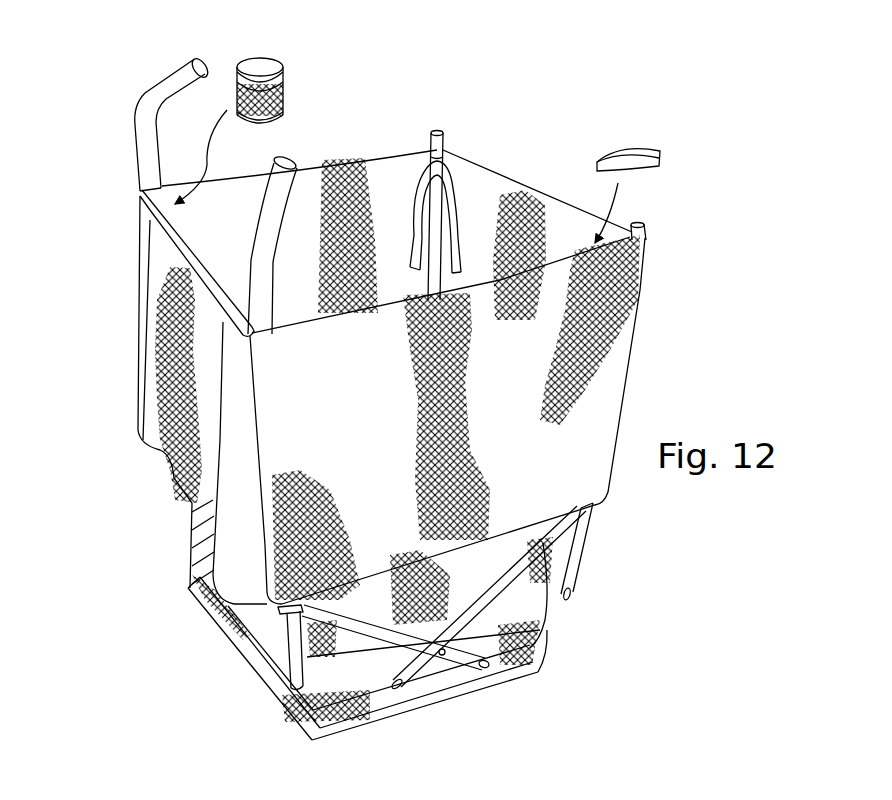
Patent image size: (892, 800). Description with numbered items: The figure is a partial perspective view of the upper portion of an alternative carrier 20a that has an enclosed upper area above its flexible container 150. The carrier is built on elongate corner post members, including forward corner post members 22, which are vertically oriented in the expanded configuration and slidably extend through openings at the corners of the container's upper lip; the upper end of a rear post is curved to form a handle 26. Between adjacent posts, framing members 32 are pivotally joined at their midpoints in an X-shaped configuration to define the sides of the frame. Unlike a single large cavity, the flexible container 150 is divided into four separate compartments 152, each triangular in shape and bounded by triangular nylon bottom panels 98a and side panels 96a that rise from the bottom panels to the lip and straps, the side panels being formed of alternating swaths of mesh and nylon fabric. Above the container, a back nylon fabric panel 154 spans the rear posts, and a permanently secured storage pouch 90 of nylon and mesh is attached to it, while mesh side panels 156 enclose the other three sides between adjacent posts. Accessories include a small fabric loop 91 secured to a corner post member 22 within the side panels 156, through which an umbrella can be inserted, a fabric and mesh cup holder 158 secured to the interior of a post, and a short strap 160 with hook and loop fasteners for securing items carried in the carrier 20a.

The carrier 20a is at (144, 56).
The handle 26 is at (147, 100).
The fabric and mesh cup holder 158 is at (276, 60).
The mesh side panels 156 is at (347, 172).
The short strap 160 is at (415, 180).
The small fabric loop 91 is at (618, 147).
The back nylon fabric panel 154 is at (184, 248).
The storage pouch 90 is at (195, 376).
The flexible container 150 is at (205, 672).
The side panels 96a is at (252, 620).
The bottom panels 98a is at (452, 690).
The framing members 32 is at (498, 580).
The compartments 152 is at (547, 582).
The forward corner post members 22 is at (592, 546).